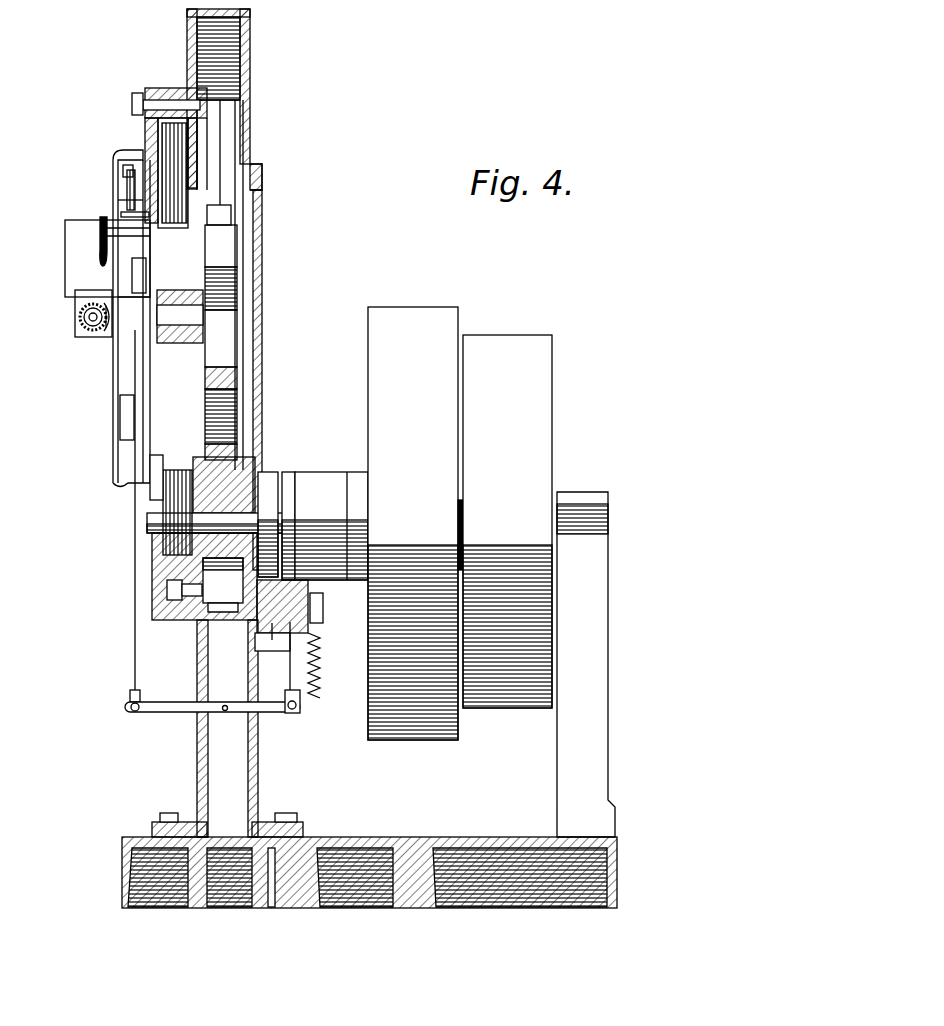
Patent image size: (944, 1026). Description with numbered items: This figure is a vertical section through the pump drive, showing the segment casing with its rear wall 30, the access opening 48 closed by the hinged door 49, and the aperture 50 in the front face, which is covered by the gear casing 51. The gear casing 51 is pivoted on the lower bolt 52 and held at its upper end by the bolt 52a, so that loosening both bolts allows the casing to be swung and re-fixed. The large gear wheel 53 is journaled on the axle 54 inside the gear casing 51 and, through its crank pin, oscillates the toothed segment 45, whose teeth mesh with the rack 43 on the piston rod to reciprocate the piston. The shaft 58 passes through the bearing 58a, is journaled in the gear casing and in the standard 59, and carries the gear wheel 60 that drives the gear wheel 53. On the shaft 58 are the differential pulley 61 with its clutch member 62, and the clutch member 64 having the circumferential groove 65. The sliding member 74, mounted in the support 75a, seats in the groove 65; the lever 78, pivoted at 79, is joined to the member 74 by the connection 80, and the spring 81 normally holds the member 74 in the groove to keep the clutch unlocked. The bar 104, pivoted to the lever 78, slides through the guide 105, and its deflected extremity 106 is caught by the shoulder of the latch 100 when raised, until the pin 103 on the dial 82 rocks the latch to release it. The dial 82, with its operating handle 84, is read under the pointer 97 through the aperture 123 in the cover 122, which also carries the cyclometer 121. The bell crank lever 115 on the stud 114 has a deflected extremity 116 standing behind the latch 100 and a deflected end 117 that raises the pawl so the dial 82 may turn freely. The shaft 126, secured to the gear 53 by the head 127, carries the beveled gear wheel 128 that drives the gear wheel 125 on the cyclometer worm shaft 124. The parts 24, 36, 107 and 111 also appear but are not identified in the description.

The frame 24 is at (188, 66).
The rear wall 30 is at (249, 68).
The opening 48 is at (256, 190).
The hinged door 49 is at (257, 300).
The aperture 50 is at (196, 196).
The gear casing 51 is at (160, 93).
The bolt 52a is at (138, 97).
The large gear wheel 53 is at (157, 140).
The cover 122 is at (117, 156).
The pointer 97 is at (123, 170).
The dial 82 is at (128, 190).
The aperture 123 is at (116, 190).
The operating handle 84 is at (121, 213).
The deflected end 117 is at (98, 226).
The cyclometer 121 is at (66, 250).
The bell crank lever 115 is at (130, 277).
The stud 114 is at (118, 298).
The beveled gear wheel 128 is at (75, 308).
The gear wheel 125 is at (80, 318).
The worm shaft 124 is at (85, 328).
The shaft 126 is at (112, 340).
The deflected extremity 116 is at (117, 350).
The latch 100 is at (120, 362).
The deflected extremity 106 is at (142, 372).
The lever 111 is at (127, 378).
The pin 107 is at (145, 386).
The guide 105 is at (120, 425).
The axle 54 is at (192, 320).
The pin 103 is at (200, 275).
The rack 43 is at (226, 262).
The head 127 is at (222, 290).
The toothed segment 45 is at (232, 356).
The bearing 58a is at (237, 472).
The shaft 58 is at (230, 536).
The gear wheel 60 is at (165, 568).
The circumferential groove 65 is at (270, 478).
The clutch member 64 is at (347, 480).
The clutch member 62 is at (372, 480).
The differential pulley 61 is at (442, 340).
The standard 59 is at (595, 632).
The base 36 is at (237, 873).
The bolt 52 is at (178, 601).
The sliding member 74 is at (292, 606).
The support 75a is at (272, 646).
The connection 80 is at (300, 676).
The spring 81 is at (321, 665).
The bar 104 is at (133, 615).
The lever 78 is at (180, 712).
The pivotal support 79 is at (225, 712).